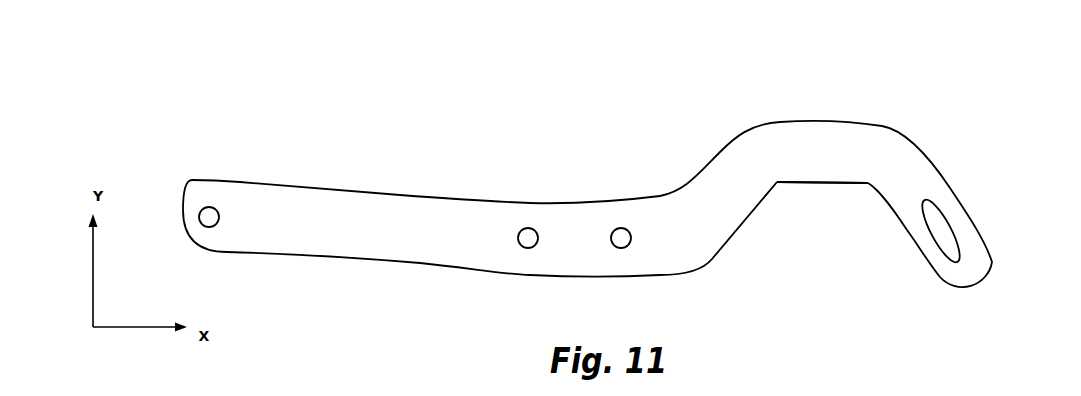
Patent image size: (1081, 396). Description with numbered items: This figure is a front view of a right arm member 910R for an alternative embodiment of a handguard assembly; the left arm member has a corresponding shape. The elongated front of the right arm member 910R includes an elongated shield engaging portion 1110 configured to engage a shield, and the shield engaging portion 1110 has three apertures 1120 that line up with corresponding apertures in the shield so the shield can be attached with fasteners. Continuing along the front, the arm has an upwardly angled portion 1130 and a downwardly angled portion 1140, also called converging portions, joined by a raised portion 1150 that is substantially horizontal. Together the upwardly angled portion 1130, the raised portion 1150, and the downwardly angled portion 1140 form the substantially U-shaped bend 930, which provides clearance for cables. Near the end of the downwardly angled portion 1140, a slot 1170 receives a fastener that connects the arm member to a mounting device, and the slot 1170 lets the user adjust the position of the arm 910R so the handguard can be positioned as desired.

The right arm member 910R is at (408, 83).
The bend 930 is at (830, 260).
The shield engaging portion 1110 is at (383, 208).
The apertures 1120 is at (208, 207).
The upwardly angled portion 1130 is at (737, 177).
The downwardly angled portion 1140 is at (910, 185).
The raised portion 1150 is at (838, 137).
The slot 1170 is at (951, 227).